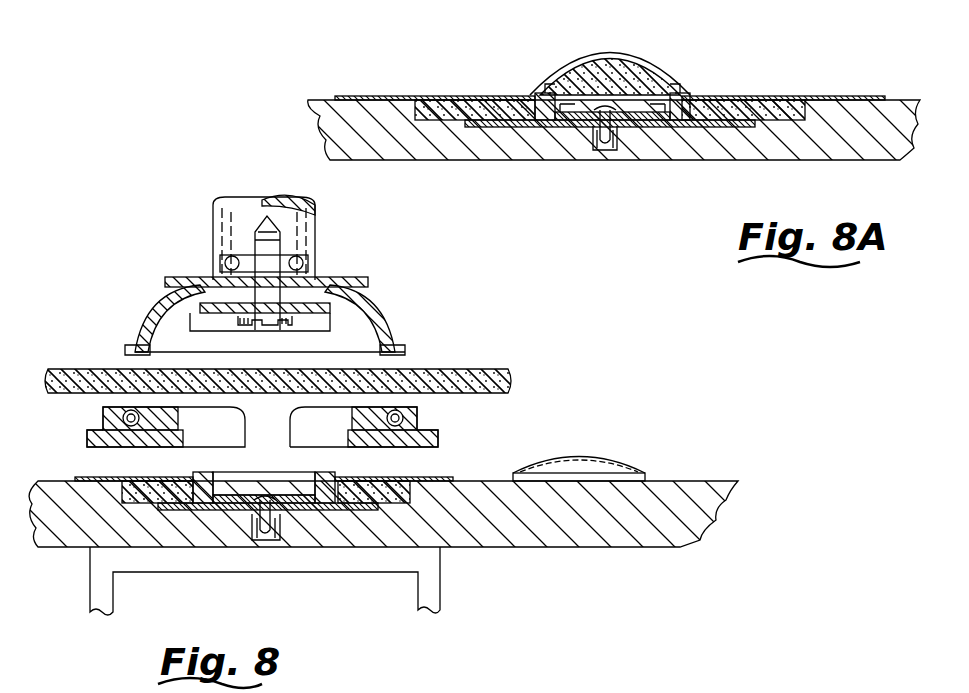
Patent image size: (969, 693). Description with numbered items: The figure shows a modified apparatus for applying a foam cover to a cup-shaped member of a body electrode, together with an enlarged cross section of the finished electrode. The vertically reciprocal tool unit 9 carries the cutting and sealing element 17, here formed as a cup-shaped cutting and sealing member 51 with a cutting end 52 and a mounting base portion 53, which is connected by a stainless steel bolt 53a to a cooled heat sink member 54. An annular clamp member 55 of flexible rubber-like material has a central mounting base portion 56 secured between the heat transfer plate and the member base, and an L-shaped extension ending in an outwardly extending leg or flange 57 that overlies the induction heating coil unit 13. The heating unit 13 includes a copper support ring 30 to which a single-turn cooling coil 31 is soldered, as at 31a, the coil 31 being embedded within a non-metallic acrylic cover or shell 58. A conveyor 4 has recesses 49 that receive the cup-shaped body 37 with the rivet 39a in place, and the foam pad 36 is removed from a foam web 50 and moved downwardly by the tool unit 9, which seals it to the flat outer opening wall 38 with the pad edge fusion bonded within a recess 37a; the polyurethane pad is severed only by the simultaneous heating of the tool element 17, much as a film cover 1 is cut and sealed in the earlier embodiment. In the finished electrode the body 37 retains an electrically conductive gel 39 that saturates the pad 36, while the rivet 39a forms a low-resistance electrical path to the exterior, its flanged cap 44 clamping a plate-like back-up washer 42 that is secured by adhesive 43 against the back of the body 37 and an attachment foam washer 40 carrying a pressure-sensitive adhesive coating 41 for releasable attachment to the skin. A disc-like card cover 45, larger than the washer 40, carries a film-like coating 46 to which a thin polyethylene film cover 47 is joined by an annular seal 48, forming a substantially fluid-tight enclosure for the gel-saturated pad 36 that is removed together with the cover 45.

In FIG. 8A, the film cover 1 is at (688, 84).
In FIG. 8A, the conveyor 4 is at (444, 162).
In FIG. 8, the conveyor 4 is at (58, 552).
In FIG. 8, the tool unit 9 is at (148, 311).
In FIG. 8, the induction heating coil unit 13 is at (448, 440).
In FIG. 8, the cutting and sealing element 17 is at (192, 312).
In FIG. 8, the support ring 30 is at (92, 438).
In FIG. 8, the cooling coil 31 is at (124, 418).
In FIG. 8, the silver solder attachment 31a is at (135, 428).
In FIG. 8A, the foam pad 36 is at (664, 74).
In FIG. 8, the foam pad 36 is at (604, 470).
In FIG. 8A, the cup-shaped body 37 is at (542, 93).
In FIG. 8, the cup-shaped body 37 is at (337, 482).
In FIG. 8, the recess 37a is at (616, 483).
In FIG. 8A, the flat outer opening wall 38 is at (690, 104).
In FIG. 8, the flat outer opening wall 38 is at (318, 482).
In FIG. 8A, the electrically conductive gel 39 is at (618, 56).
In FIG. 8A, the rivet 39a is at (600, 140).
In FIG. 8, the rivet 39a is at (260, 545).
In FIG. 8A, the attachment foam washer 40 is at (786, 96).
In FIG. 8, the attachment foam washer 40 is at (402, 481).
In FIG. 8A, the pressure-sensitive adhesive coating 41 is at (818, 96).
In FIG. 8, the pressure-sensitive adhesive coating 41 is at (378, 490).
In FIG. 8A, the back-up washer 42 is at (738, 120).
In FIG. 8, the back-up washer 42 is at (345, 503).
In FIG. 8A, the adhesive 43 is at (700, 127).
In FIG. 8, the adhesive 43 is at (310, 512).
In FIG. 8A, the flanged cap 44 is at (614, 150).
In FIG. 8, the flanged cap 44 is at (270, 540).
In FIG. 8A, the cover 45 is at (858, 96).
In FIG. 8A, the film-like coating 46 is at (742, 96).
In FIG. 8A, the film cover 47 is at (600, 52).
In FIG. 8A, the annular seal 48 is at (454, 96).
In FIG. 8A, the recess 49 is at (495, 125).
In FIG. 8, the recess 49 is at (150, 505).
In FIG. 8, the foam web 50 is at (440, 369).
In FIG. 8, the cup-shaped cutting and sealing member 51 is at (322, 310).
In FIG. 8, the cutting end 52 is at (300, 332).
In FIG. 8, the mounting base portion 53 is at (290, 300).
In FIG. 8, the bolt 53a is at (268, 326).
In FIG. 8, the heat sink member 54 is at (305, 222).
In FIG. 8, the annular clamp member 55 is at (368, 300).
In FIG. 8, the central mounting base portion 56 is at (215, 280).
In FIG. 8, the leg or flange 57 is at (388, 345).
In FIG. 8, the non-metallic cover or shell 58 is at (418, 418).